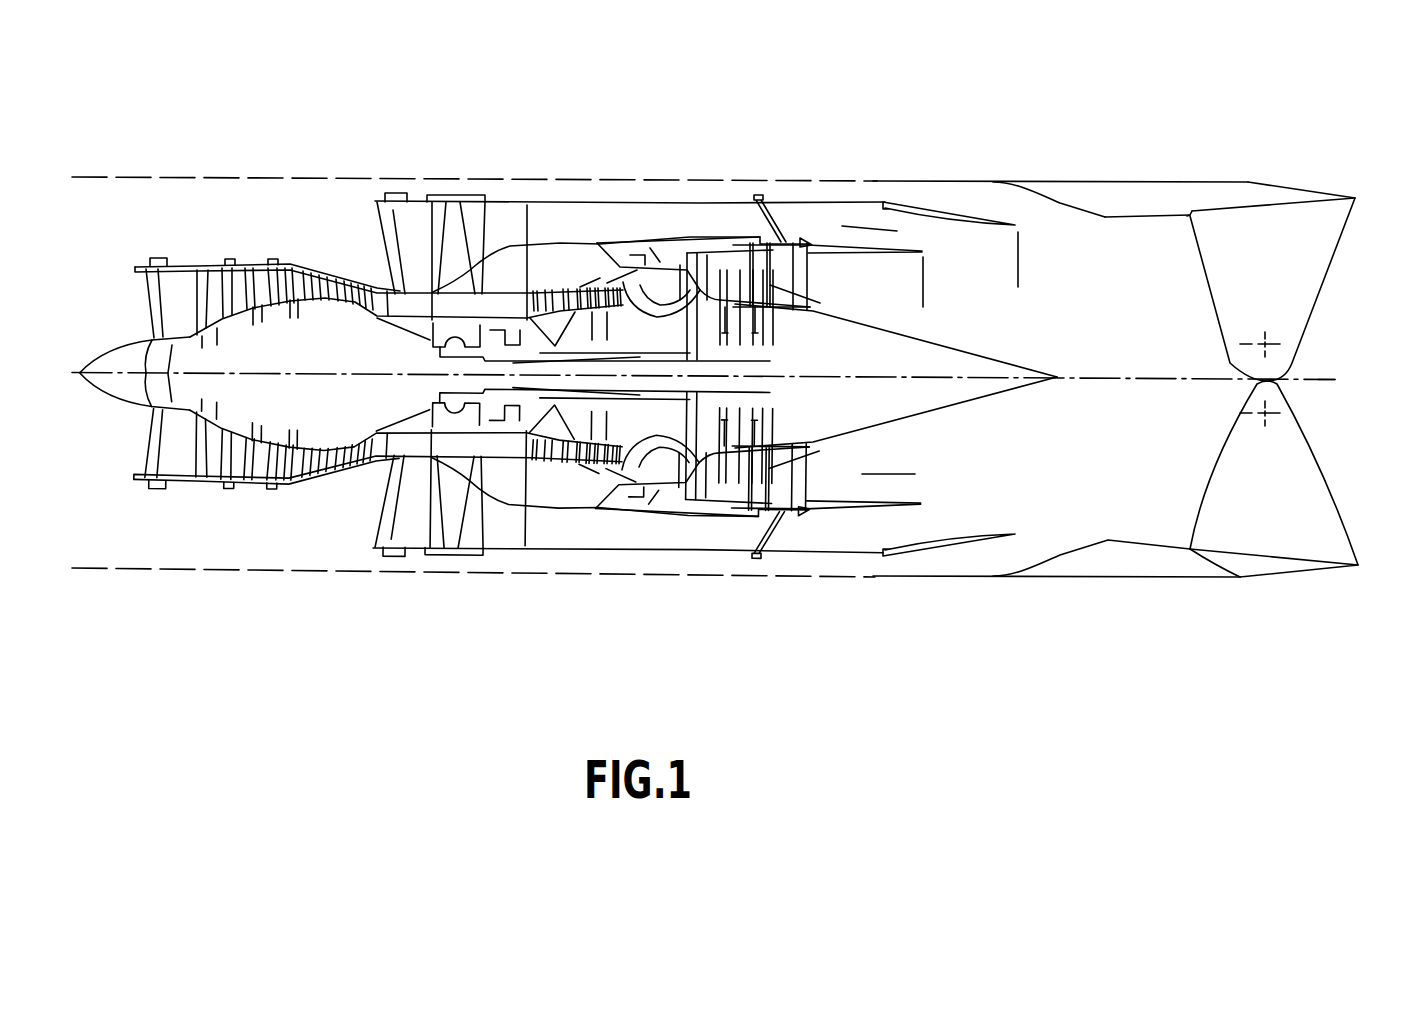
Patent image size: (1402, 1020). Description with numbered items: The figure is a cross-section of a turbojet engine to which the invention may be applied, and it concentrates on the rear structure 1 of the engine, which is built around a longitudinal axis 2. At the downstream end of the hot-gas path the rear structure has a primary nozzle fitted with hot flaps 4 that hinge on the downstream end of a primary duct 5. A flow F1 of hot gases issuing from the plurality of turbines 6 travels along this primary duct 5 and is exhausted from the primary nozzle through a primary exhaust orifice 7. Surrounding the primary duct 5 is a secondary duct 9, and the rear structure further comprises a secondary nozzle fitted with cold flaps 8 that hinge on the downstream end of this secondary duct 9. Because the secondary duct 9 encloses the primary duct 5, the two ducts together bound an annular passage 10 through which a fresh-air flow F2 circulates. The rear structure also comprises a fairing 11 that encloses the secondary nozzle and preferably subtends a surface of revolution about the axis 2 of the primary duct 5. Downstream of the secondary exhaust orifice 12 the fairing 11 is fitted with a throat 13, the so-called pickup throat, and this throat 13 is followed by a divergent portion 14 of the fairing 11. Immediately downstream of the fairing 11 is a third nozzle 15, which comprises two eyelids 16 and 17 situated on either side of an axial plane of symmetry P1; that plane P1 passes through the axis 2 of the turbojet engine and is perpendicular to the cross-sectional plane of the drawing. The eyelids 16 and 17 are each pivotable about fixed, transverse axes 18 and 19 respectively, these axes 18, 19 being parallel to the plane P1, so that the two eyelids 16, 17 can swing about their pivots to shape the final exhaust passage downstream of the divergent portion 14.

The rear structure 1 is at (1034, 582).
The longitudinal axis 2 is at (1108, 392).
The hot flaps 4 is at (855, 506).
The primary duct 5 is at (795, 512).
The turbines 6 is at (745, 505).
The primary exhaust orifice 7 is at (925, 270).
The cold flaps 8 is at (957, 203).
The secondary duct 9 is at (813, 203).
The annular passage 10 is at (665, 217).
The fairing 11 is at (1062, 182).
The secondary exhaust orifice 12 is at (1018, 257).
The throat 13 is at (1107, 217).
The divergent portion 14 is at (1164, 218).
The third nozzle 15 is at (1287, 177).
The eyelid 16 is at (1254, 194).
The eyelid 17 is at (1290, 572).
The transverse axis 18 is at (1268, 342).
The transverse axis 19 is at (1268, 411).
The flow of hot gases F1 is at (888, 456).
The fresh-air flow F2 is at (849, 225).
The axial plane of symmetry P1 is at (1320, 378).